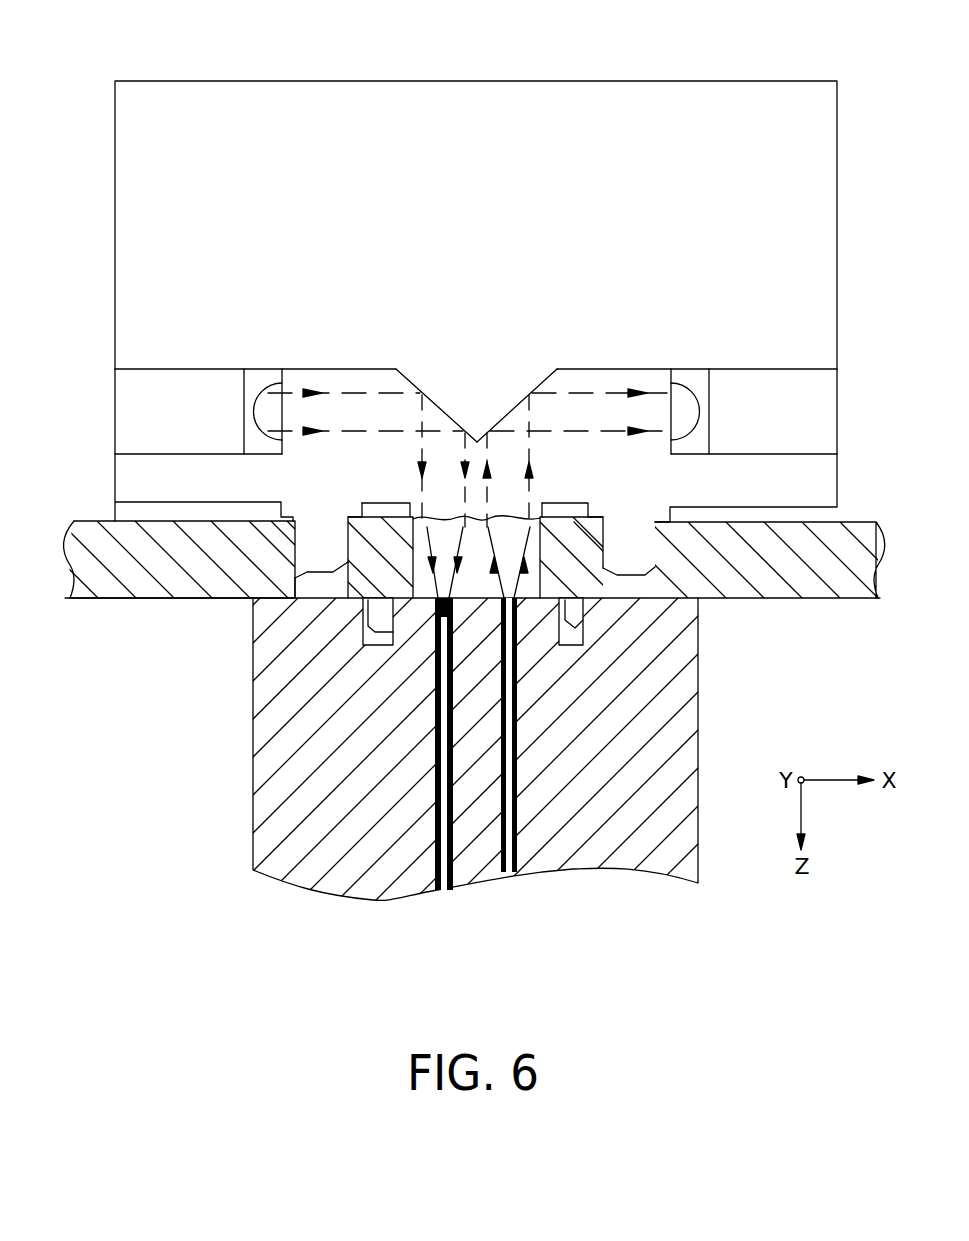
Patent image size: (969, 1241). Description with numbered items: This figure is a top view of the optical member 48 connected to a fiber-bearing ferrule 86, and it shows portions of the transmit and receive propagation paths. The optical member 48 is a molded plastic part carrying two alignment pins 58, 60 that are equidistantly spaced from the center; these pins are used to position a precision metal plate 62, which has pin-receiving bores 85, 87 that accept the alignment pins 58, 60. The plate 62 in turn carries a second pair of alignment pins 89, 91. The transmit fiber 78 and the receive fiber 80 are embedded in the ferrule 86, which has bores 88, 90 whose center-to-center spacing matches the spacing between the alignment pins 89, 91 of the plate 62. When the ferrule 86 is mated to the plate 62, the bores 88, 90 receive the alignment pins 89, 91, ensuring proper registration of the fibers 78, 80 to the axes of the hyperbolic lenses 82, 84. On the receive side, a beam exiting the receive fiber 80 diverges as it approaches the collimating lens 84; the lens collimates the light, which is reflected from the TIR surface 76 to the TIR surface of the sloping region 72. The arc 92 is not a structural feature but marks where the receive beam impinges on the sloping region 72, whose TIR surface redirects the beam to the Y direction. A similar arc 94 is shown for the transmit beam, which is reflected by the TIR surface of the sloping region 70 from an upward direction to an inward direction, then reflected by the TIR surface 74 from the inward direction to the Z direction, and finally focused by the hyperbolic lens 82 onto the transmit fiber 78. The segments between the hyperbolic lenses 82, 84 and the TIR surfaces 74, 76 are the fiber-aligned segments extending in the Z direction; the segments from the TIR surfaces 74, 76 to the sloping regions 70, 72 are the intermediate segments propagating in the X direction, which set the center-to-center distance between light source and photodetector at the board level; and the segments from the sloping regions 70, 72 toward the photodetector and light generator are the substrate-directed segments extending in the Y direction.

The optical member 48 is at (686, 46).
The alignment pin 58 is at (327, 552).
The alignment pin 60 is at (632, 553).
The precision metal plate 62 is at (113, 598).
The sloping region 70 is at (264, 375).
The sloping region 72 is at (688, 378).
The TIR surface 74 is at (418, 392).
The TIR surface 76 is at (500, 408).
The transmit fiber 78 is at (443, 890).
The receive fiber 80 is at (507, 872).
The hyperbolic lens 82 is at (448, 525).
The collimating lens 84 is at (503, 525).
The pin-receiving bore 85 is at (253, 612).
The ferrule 86 is at (368, 890).
The pin-receiving bore 87 is at (643, 590).
The bore 88 is at (373, 640).
The alignment pin 89 is at (372, 612).
The bore 90 is at (575, 642).
The alignment pin 91 is at (565, 623).
The arc 92 is at (705, 417).
The arc 94 is at (247, 412).